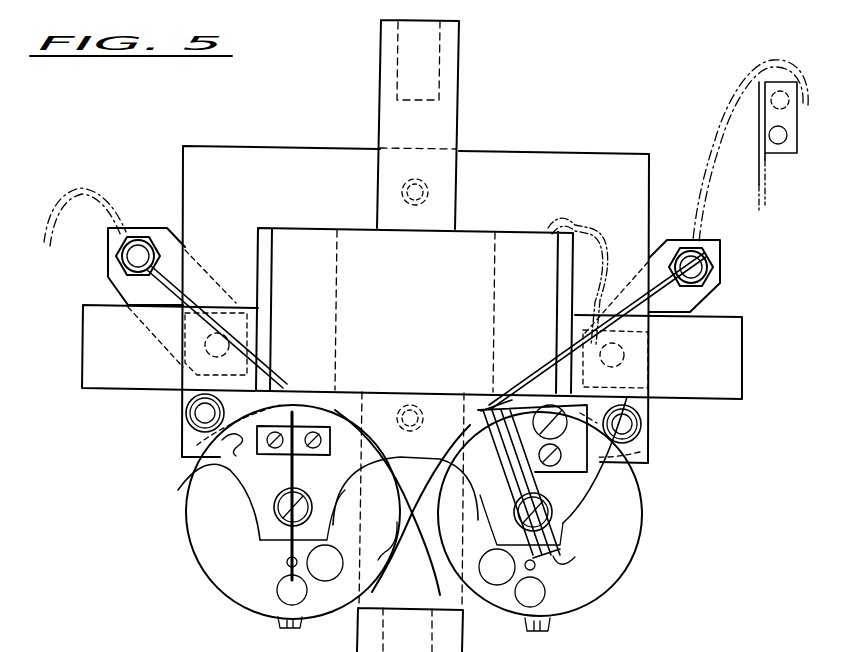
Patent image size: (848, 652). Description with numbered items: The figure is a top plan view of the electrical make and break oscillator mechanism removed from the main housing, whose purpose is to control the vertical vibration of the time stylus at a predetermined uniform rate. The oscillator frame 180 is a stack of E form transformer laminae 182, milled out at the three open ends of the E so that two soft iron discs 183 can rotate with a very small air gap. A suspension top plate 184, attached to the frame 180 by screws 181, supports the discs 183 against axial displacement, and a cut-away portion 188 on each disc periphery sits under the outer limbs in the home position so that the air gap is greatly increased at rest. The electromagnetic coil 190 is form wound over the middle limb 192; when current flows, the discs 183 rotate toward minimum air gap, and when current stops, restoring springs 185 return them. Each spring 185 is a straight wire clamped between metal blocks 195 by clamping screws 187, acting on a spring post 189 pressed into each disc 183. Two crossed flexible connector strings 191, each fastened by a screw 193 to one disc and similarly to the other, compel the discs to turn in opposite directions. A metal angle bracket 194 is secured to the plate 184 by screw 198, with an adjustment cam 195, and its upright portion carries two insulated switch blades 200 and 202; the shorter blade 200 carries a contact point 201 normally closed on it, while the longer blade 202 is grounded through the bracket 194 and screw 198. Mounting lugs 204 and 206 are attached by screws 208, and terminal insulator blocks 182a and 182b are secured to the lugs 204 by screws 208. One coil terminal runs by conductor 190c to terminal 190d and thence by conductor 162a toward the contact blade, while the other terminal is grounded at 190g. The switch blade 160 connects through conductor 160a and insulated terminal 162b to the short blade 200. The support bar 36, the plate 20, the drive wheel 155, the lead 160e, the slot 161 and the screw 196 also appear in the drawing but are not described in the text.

The right plate 20 is at (742, 353).
The support bar 36 is at (481, 51).
The drive wheel 155 is at (400, 496).
The switch blade 160 is at (759, 176).
The conductor 160a is at (720, 108).
The bracket lead 160e is at (598, 236).
The slot 161 is at (184, 366).
The conductor 162a is at (50, 196).
The insulated terminal 162b is at (700, 263).
The oscillator frame 180 is at (596, 139).
The screws 181 is at (186, 413).
The E form transformer laminae 182 is at (610, 222).
The terminal insulator block 182a is at (110, 278).
The terminal insulator block 182b is at (720, 296).
The soft iron disc 183 is at (200, 533).
The suspension top plate 184 is at (618, 172).
The restoring spring 185 is at (282, 546).
The clamping screw 187 is at (312, 458).
The cut-away portion 188 is at (205, 470).
The spring post 189 is at (285, 566).
The electromagnetic coil 190 is at (432, 295).
The conductor 190c is at (170, 292).
The terminal 190d is at (138, 256).
The ground point 190g is at (660, 357).
The crossed flexible connector strings 191 is at (384, 566).
The middle limb 192 is at (498, 316).
The screw 193 is at (264, 640).
The metal angle bracket 194 is at (610, 398).
The metal block 195 is at (263, 458).
The screw 196 is at (550, 404).
The screw 198 is at (557, 501).
The switch blade 200 is at (488, 490).
The contact point 201 is at (584, 555).
The switch blade 202 is at (562, 540).
The mounting lug 204 is at (84, 345).
The mounting lug 206 is at (459, 104).
The screws 208 is at (430, 192).